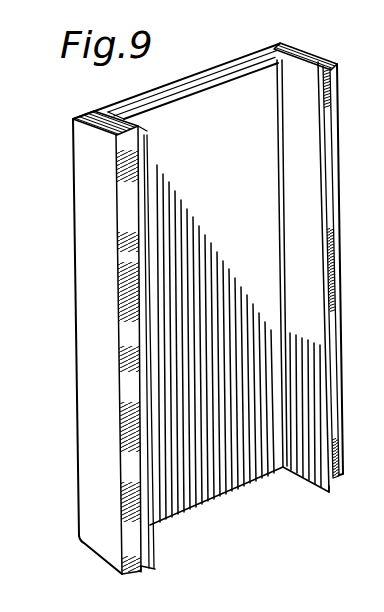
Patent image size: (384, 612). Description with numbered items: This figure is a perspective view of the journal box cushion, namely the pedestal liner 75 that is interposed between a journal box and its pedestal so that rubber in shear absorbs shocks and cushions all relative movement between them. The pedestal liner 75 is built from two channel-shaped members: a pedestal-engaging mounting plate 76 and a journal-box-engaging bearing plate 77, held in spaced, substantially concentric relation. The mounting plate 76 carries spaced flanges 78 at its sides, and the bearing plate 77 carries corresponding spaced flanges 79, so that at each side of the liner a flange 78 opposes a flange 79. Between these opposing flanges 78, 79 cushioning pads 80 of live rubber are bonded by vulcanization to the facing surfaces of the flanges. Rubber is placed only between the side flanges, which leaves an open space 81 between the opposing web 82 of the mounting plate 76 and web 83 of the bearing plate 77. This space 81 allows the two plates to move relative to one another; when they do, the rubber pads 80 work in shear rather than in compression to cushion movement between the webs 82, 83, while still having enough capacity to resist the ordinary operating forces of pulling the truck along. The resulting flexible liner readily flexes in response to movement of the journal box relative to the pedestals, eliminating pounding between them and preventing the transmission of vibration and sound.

The pedestal liner 75 is at (72, 260).
The mounting plate 76 is at (127, 111).
The bearing plate 77 is at (233, 57).
The flange 78 is at (303, 65).
The flange 79 is at (112, 144).
The cushioning pad 80 is at (80, 134).
The space 81 is at (178, 88).
The web 82 is at (158, 108).
The web 83 is at (186, 77).